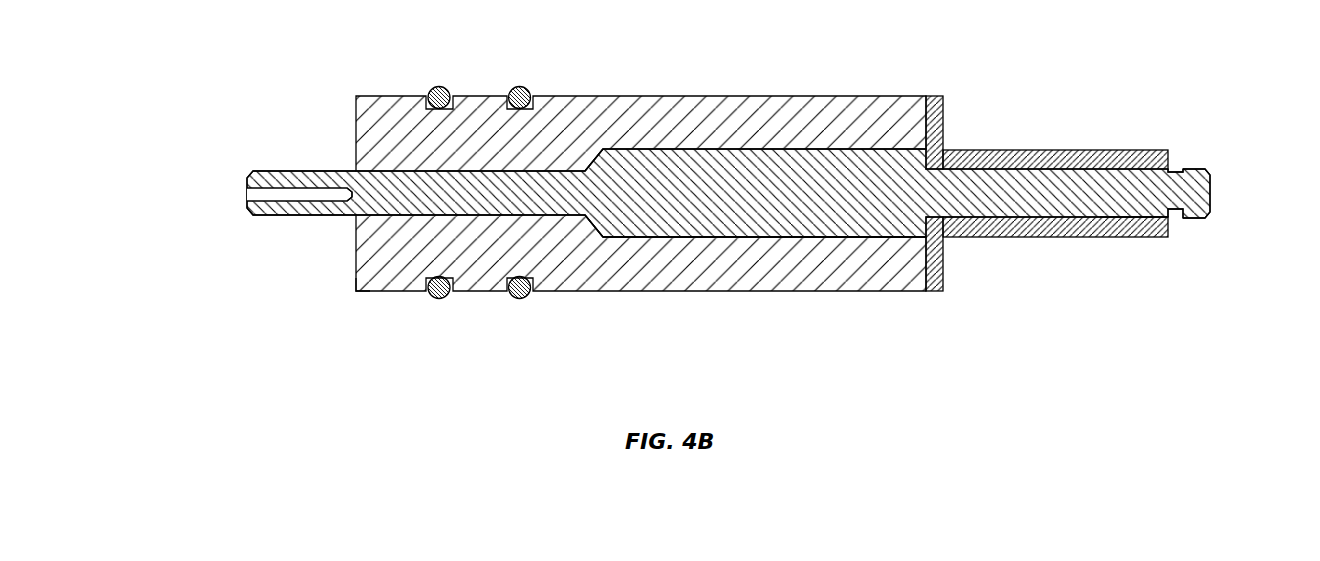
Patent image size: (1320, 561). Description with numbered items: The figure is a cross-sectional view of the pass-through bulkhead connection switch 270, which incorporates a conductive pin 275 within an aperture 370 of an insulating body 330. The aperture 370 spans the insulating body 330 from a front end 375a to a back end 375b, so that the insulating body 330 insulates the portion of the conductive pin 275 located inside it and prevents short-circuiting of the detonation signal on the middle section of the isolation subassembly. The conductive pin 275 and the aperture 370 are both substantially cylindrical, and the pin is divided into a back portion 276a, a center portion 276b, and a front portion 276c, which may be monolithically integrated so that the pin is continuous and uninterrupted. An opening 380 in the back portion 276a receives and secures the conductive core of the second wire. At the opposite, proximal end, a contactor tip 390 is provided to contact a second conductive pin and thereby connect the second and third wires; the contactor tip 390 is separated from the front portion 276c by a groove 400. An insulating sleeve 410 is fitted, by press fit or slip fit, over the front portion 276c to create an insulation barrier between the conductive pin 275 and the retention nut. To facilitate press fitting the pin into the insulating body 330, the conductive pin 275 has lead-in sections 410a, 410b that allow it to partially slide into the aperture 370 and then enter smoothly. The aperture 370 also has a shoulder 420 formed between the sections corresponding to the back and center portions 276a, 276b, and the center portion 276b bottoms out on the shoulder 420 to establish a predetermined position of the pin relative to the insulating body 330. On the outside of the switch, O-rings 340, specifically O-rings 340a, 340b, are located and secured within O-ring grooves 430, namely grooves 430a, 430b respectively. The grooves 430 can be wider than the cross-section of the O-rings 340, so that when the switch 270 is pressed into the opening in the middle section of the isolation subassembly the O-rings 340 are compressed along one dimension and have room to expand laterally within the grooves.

The pass-through bulkhead connection switch 270 is at (995, 62).
The conductive pin 275 is at (996, 195).
The back portion 276a is at (352, 203).
The center portion 276b is at (845, 225).
The front portion 276c is at (1118, 211).
The insulating body 330 is at (694, 120).
The O-rings 340 is at (540, 345).
The O-ring 340a is at (439, 299).
The O-ring 340b is at (518, 299).
The aperture 370 is at (788, 241).
The front end 375a is at (924, 292).
The back end 375b is at (355, 291).
The opening 380 is at (272, 202).
The contactor tip 390 is at (1210, 195).
The groove 400 is at (1175, 172).
The insulating sleeve 410 is at (1050, 238).
The lead-in section 410a is at (250, 177).
The lead-in section 410b is at (590, 162).
The shoulder 420 is at (594, 234).
The O-ring grooves 430 is at (538, 52).
The O-ring groove 430a is at (429, 90).
The O-ring groove 430b is at (509, 90).